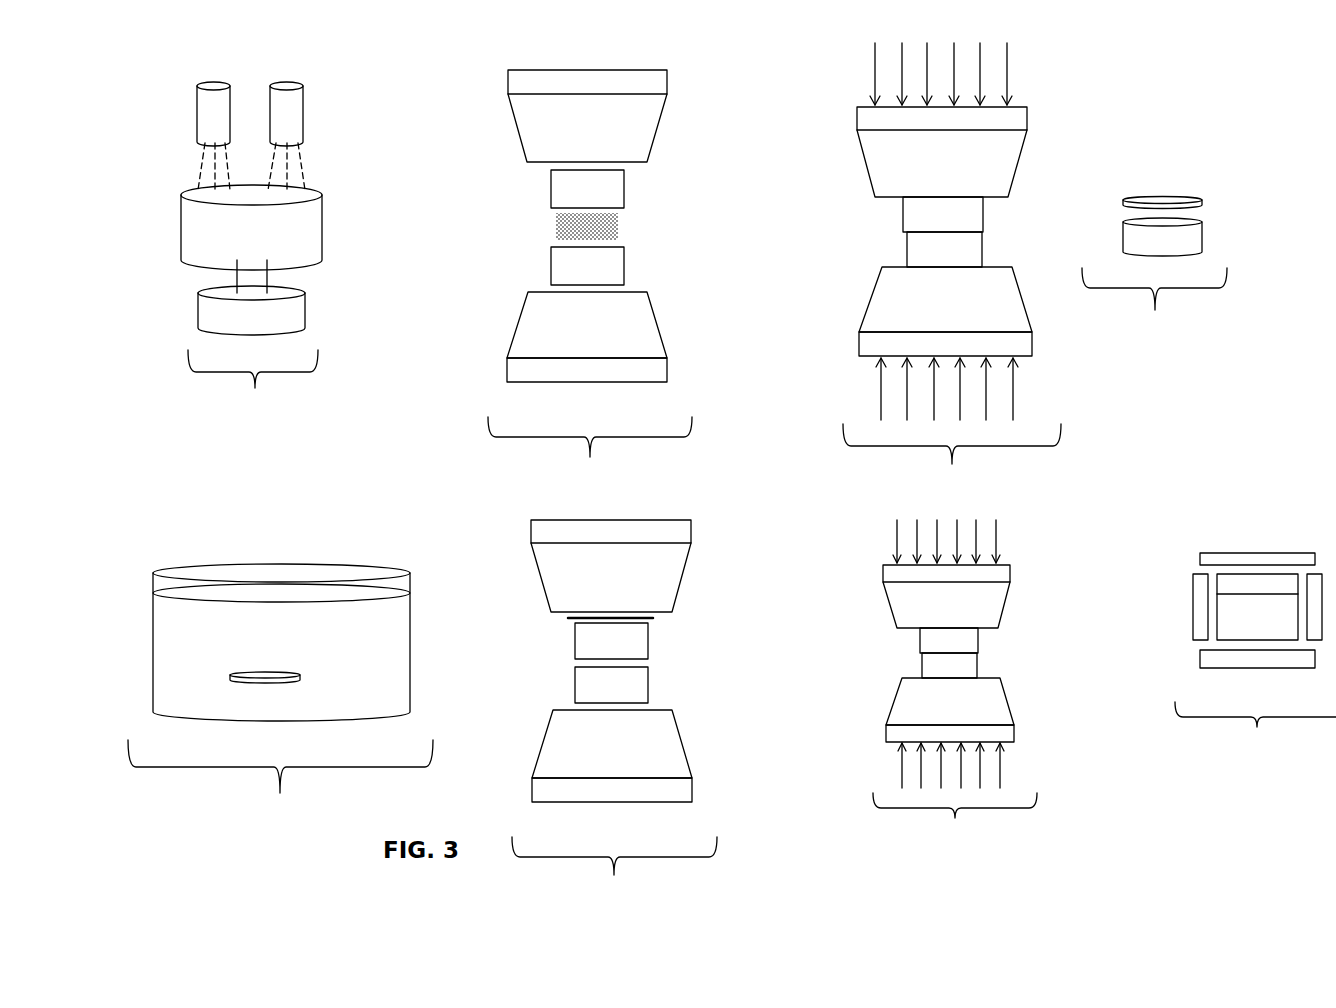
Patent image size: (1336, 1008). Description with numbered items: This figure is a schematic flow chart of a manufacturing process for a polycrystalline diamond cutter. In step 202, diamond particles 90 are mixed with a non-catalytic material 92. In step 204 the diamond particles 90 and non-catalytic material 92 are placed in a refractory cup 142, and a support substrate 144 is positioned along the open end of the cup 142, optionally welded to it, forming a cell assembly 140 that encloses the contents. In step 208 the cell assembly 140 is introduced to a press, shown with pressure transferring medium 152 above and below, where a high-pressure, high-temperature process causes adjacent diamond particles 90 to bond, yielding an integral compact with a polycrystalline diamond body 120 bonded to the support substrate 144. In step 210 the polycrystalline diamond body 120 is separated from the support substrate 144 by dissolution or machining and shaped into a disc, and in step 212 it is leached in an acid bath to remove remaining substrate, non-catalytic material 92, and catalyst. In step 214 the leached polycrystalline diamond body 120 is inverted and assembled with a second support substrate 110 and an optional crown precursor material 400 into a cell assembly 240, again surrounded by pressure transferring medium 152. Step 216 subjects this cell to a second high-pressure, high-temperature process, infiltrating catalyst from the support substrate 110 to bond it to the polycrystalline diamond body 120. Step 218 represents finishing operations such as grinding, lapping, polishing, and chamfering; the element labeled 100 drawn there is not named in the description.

The diamond particles 90 is at (200, 160).
The non-catalytic material 92 is at (302, 170).
The heat exchanger assembly 100 is at (1212, 567).
The second support substrate 110 is at (648, 683).
The polycrystalline diamond body 120 is at (1198, 190).
The cell assembly 140 is at (676, 154).
The cup 142 is at (549, 189).
The support substrate 144 is at (626, 263).
The pressure transferring medium 152 is at (518, 130).
The mixing step 202 is at (251, 250).
The cup loading step 204 is at (590, 278).
The first HPHT pressing step 208 is at (952, 269).
The substrate separation step 210 is at (1154, 269).
The leaching step 212 is at (280, 694).
The second cell assembly step 214 is at (614, 713).
The second HPHT pressing step 216 is at (955, 686).
The finishing step 218 is at (1255, 656).
The second cell assembly 240 is at (727, 560).
The crown precursor material 400 is at (653, 618).